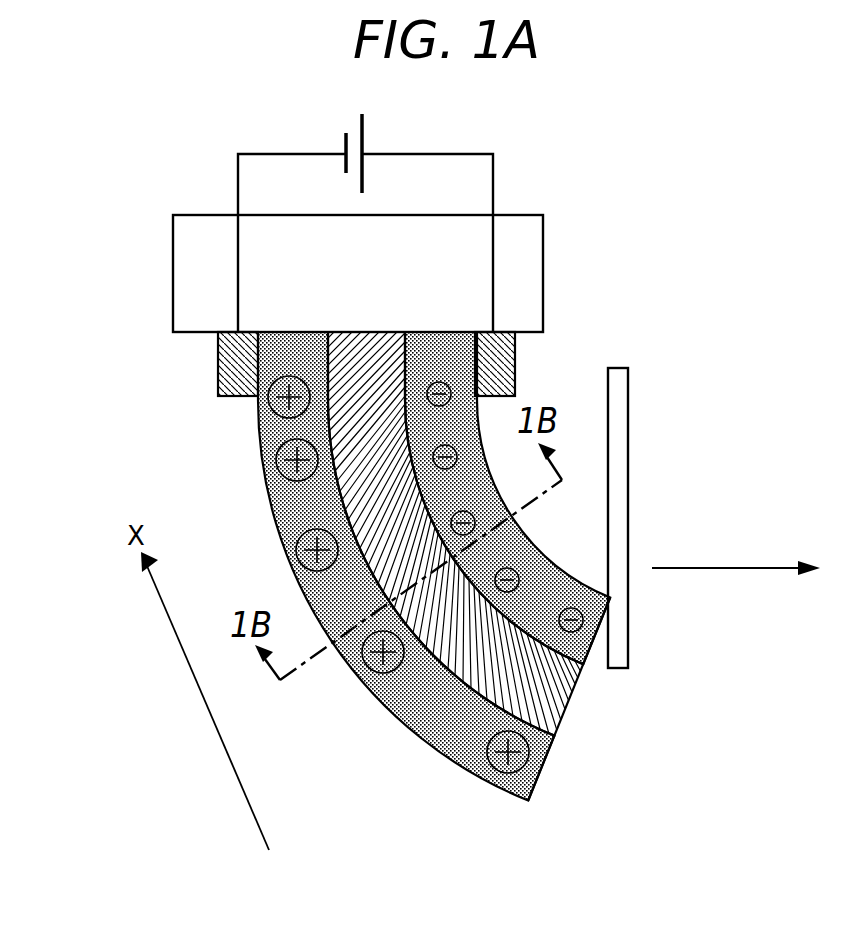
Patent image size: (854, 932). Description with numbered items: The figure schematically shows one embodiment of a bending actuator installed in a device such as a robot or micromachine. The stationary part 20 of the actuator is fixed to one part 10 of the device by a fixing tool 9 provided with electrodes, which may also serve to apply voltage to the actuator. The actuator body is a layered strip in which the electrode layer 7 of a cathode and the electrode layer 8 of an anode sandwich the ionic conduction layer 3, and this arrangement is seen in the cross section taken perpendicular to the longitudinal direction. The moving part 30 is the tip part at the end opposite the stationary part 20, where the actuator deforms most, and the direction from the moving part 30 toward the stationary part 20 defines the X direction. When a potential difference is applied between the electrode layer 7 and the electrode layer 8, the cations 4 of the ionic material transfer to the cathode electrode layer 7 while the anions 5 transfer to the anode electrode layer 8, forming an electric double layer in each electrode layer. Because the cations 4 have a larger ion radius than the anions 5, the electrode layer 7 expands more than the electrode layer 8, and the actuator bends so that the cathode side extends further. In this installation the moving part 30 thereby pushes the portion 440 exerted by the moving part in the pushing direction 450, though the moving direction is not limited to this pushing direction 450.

The ionic conduction layer 3 is at (558, 702).
The cations 4 is at (355, 673).
The anions 5 is at (515, 573).
The electrode layer of cathode 7 is at (538, 770).
The electrode layer of anode 8 is at (582, 645).
The fixing tool 9 is at (237, 391).
The part of the device 10 is at (541, 257).
The stationary part 20 is at (139, 312).
The moving part 30 is at (430, 762).
The portion exerted by the moving part 440 is at (628, 416).
The pushing direction 450 is at (735, 568).